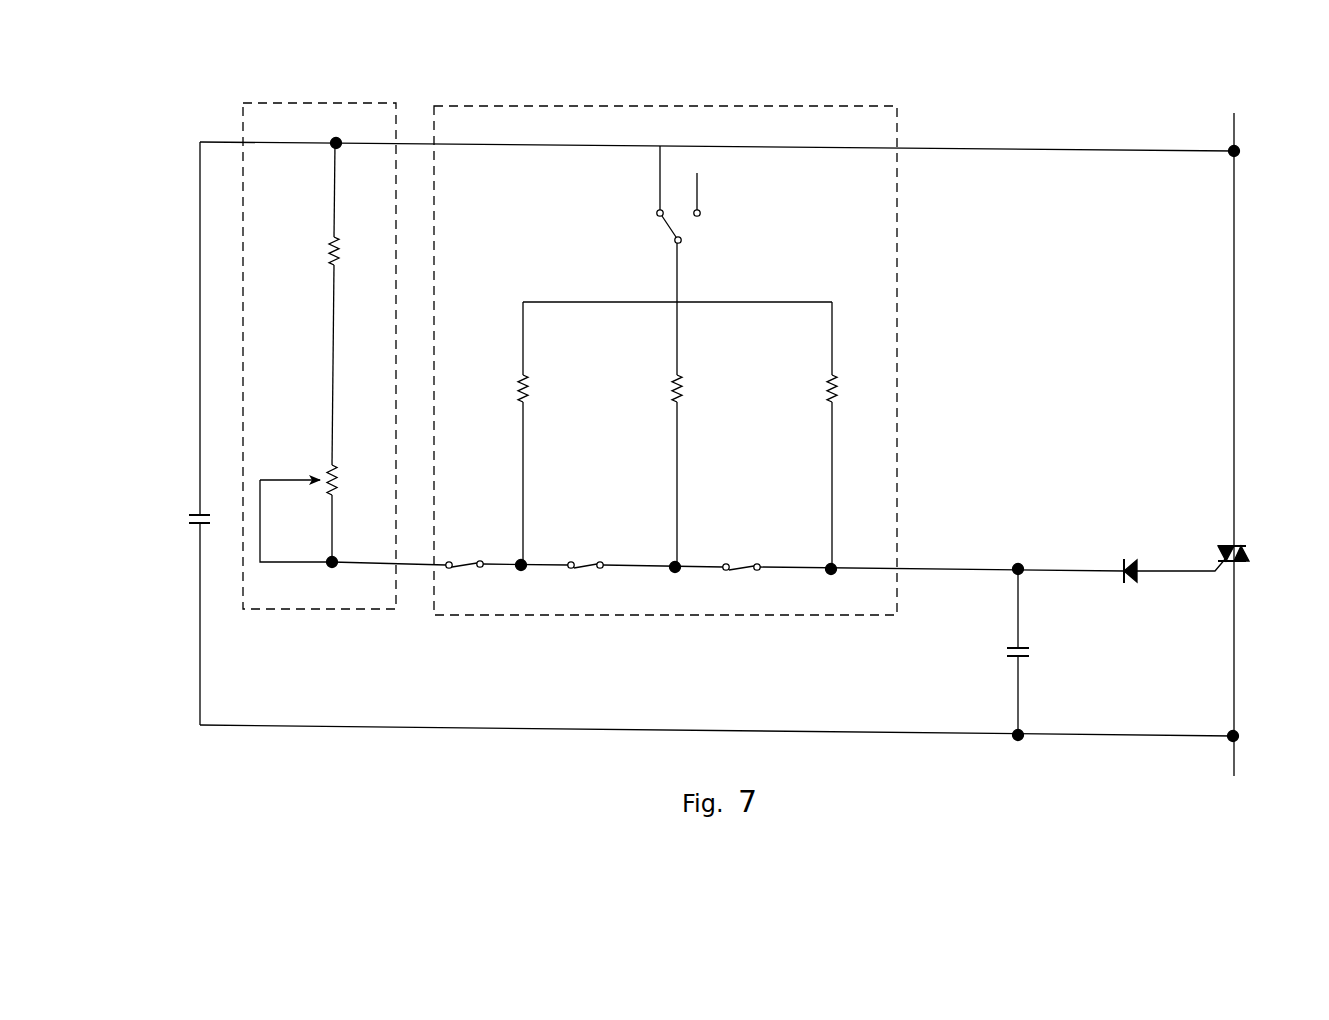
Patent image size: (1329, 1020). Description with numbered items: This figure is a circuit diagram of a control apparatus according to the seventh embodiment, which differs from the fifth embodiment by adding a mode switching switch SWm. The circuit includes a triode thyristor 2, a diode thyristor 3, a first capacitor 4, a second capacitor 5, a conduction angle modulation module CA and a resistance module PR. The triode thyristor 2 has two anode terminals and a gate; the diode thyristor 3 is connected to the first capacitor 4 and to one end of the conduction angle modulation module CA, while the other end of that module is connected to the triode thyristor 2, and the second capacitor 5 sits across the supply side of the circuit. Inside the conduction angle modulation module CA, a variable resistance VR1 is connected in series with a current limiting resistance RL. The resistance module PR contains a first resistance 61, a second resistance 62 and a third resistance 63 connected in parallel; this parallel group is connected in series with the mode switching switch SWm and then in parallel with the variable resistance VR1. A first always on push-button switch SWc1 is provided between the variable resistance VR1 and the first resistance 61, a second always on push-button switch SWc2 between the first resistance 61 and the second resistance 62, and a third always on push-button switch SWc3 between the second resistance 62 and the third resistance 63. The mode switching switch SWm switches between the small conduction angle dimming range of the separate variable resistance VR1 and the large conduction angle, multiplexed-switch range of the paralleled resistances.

The conduction angle modulation module CA is at (283, 103).
The resistance module PR is at (598, 106).
The current limiting resistance RL is at (349, 253).
The variable resistance VR1 is at (347, 488).
The mode switching switch SWm is at (688, 231).
The first resistance 61 is at (546, 394).
The second resistance 62 is at (692, 394).
The third resistance 63 is at (818, 394).
The first always on push-button switch SWc1 is at (468, 553).
The second always on push-button switch SWc2 is at (588, 553).
The third always on push-button switch SWc3 is at (738, 553).
The second capacitor 5 is at (182, 540).
The first capacitor 4 is at (1003, 652).
The diode thyristor 3 is at (1131, 550).
The triode thyristor 2 is at (1252, 548).